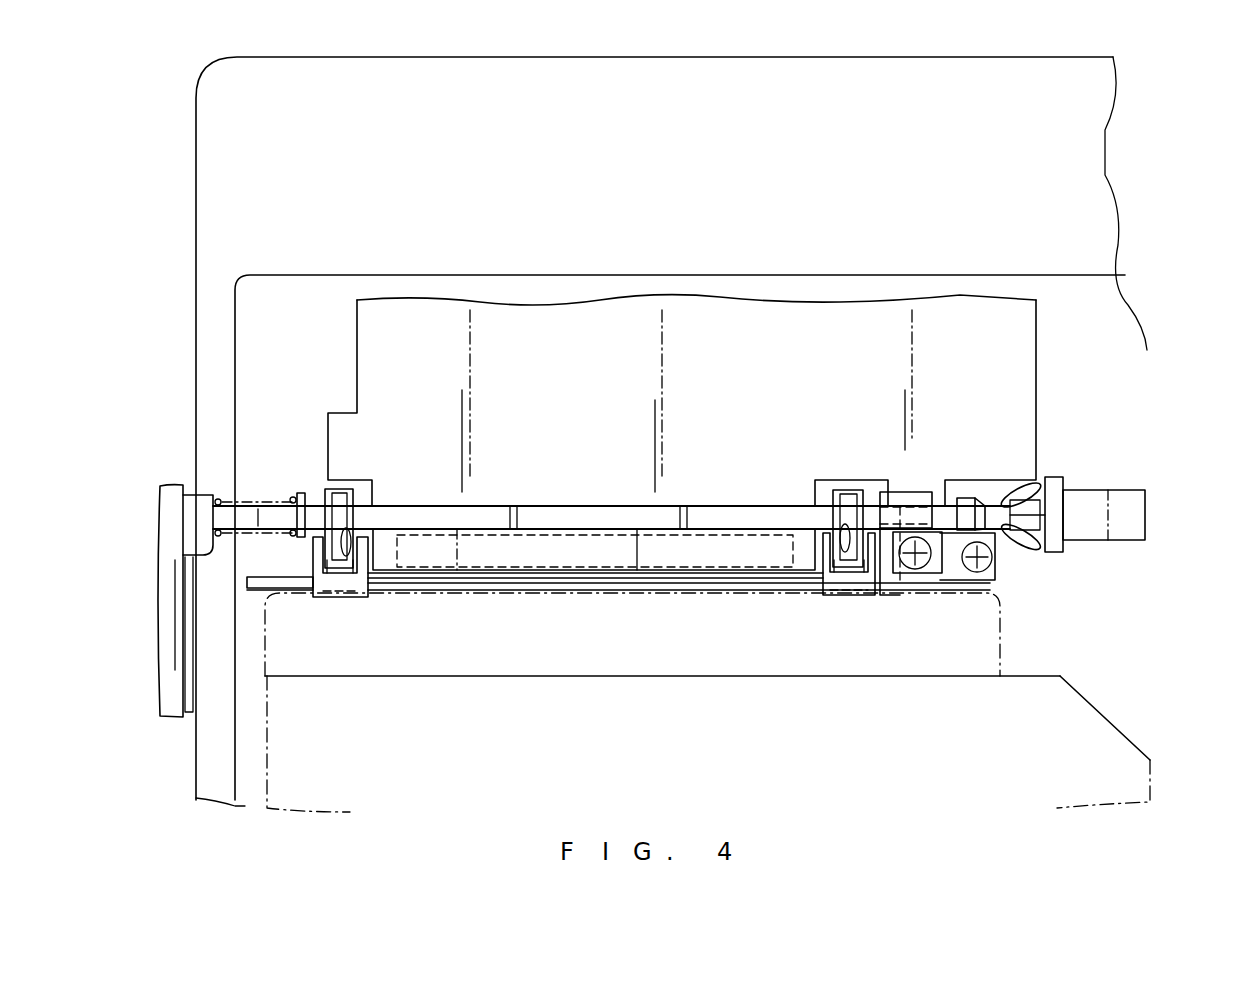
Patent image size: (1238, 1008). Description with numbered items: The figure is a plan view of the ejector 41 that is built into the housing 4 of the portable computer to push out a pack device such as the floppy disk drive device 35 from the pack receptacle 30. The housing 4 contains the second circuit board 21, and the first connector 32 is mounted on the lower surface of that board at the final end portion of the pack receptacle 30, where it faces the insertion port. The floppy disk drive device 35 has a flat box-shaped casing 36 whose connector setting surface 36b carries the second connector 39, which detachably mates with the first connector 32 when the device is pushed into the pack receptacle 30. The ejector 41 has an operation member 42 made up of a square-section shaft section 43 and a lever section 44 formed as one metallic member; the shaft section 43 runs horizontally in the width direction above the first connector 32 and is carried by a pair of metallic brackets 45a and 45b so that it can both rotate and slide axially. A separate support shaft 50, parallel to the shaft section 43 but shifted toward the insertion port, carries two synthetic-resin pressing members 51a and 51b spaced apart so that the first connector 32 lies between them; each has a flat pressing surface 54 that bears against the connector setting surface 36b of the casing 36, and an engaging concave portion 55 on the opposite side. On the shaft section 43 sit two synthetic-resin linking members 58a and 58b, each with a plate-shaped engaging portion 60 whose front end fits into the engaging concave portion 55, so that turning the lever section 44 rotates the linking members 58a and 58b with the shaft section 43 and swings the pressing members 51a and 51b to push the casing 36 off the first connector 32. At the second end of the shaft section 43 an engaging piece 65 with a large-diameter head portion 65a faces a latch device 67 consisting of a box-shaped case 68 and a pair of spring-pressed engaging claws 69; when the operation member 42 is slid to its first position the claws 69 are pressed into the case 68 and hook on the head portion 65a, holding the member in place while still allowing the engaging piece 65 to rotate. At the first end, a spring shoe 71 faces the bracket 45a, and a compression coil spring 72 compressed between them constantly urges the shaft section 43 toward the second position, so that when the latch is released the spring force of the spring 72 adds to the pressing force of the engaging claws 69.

The housing 4 is at (195, 250).
The second circuit board 21 is at (790, 340).
The pack receptacle 30 is at (262, 806).
The first connector 32 is at (570, 545).
The floppy disk drive device (FDD) 35 is at (1105, 715).
The casing 36 is at (1143, 792).
The connector setting surface 36b is at (475, 592).
The second connector 39 is at (652, 585).
The ejector 41 is at (628, 506).
The operation member 42 is at (494, 506).
The shaft section 43 is at (717, 506).
The lever section 44 is at (165, 602).
The bracket 45a is at (308, 520).
The bracket 45b is at (912, 500).
The support shaft 50 is at (290, 590).
The pressing member 51a is at (357, 595).
The pressing member 51b is at (862, 596).
The pressing surface 54 is at (334, 597).
The engaging concave portion 55 is at (350, 540).
The linking member 58a is at (343, 489).
The linking member 58b is at (850, 490).
The engaging portion 60 is at (335, 562).
The engaging piece 65 is at (992, 510).
The head portion 65a is at (1032, 516).
The latch device 67 is at (1152, 490).
The case 68 is at (1138, 520).
The engaging claws 69 is at (1022, 487).
The spring shoe 71 is at (192, 545).
The compression coil spring 72 is at (218, 496).